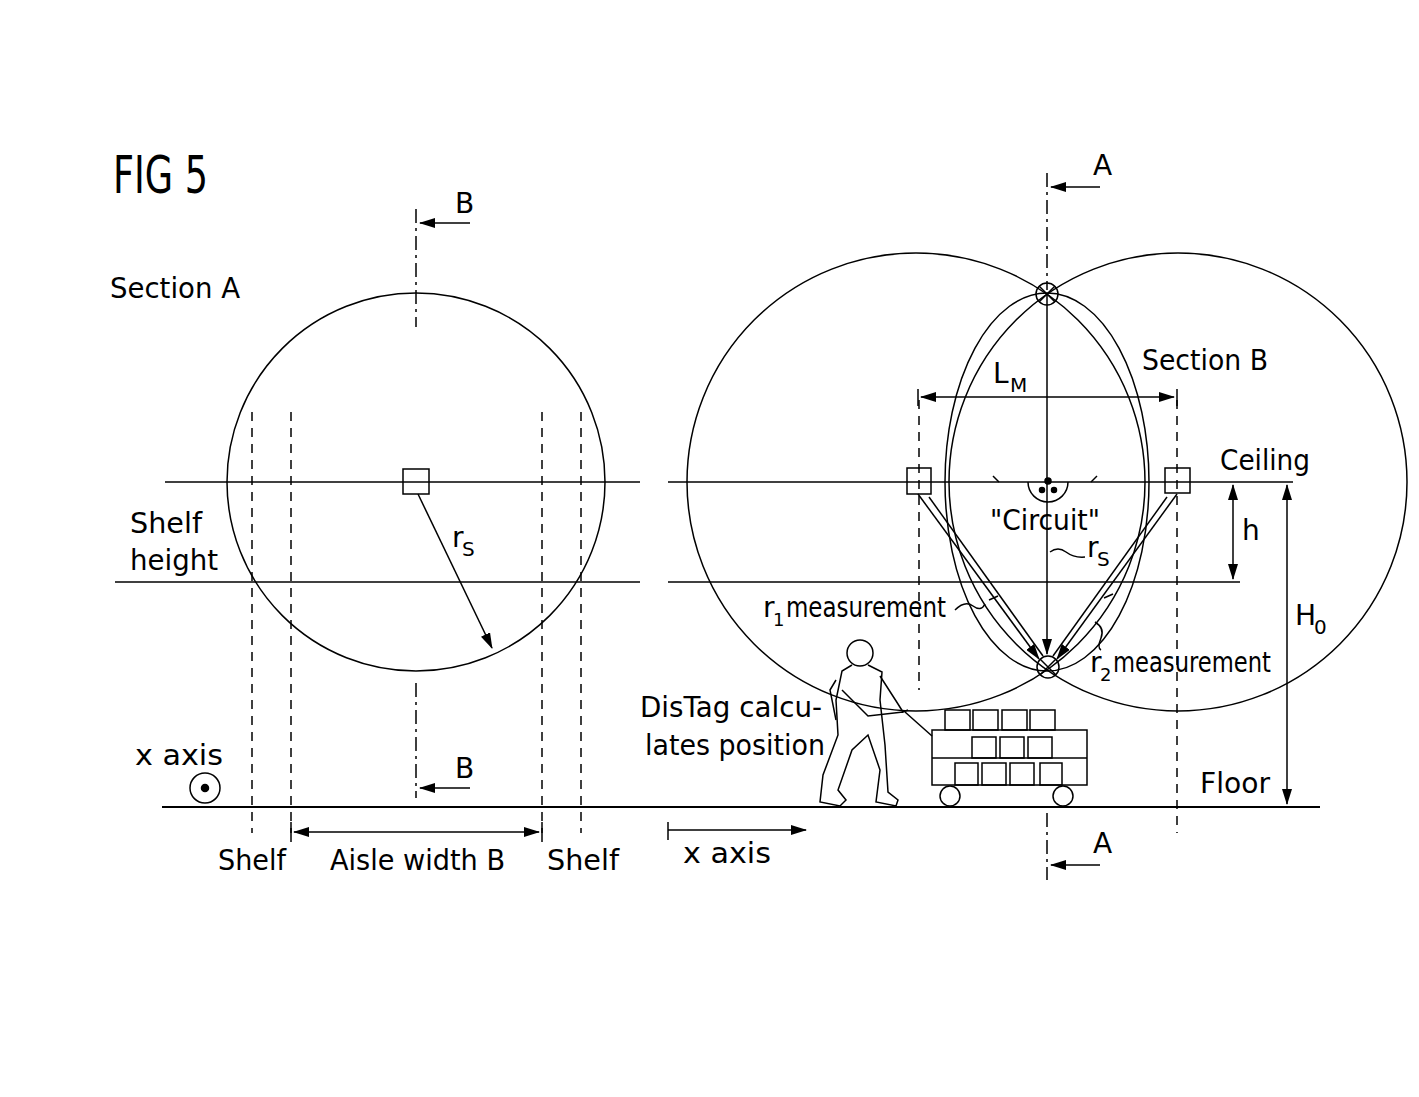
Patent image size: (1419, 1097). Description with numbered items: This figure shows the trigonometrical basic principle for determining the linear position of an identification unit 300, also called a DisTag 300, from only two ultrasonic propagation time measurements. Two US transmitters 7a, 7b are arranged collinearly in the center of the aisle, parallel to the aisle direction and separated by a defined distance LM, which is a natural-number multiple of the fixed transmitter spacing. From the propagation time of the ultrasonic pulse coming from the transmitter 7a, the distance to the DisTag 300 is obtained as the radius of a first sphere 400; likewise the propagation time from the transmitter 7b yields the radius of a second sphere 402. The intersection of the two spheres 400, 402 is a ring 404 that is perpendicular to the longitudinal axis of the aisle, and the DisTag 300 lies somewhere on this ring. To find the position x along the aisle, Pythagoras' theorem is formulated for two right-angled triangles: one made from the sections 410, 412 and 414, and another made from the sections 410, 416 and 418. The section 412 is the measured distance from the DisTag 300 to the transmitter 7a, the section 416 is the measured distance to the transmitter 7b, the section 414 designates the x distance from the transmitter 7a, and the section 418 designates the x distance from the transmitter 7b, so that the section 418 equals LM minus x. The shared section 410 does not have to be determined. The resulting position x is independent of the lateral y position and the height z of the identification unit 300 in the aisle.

The sphere 400 is at (750, 327).
The sphere 402 is at (1352, 323).
The ring 404 is at (523, 328).
The US transmitter 7a is at (912, 468).
The US transmitter 7b is at (1183, 468).
The section 414 is at (995, 480).
The section 418 is at (1090, 480).
The section 412 is at (938, 528).
The section 410 is at (1046, 554).
The section 416 is at (1113, 592).
The identification unit 300 is at (1057, 715).